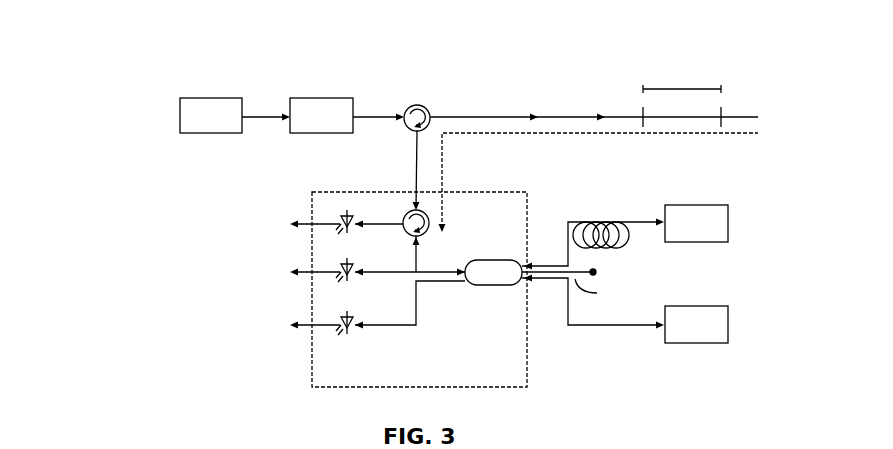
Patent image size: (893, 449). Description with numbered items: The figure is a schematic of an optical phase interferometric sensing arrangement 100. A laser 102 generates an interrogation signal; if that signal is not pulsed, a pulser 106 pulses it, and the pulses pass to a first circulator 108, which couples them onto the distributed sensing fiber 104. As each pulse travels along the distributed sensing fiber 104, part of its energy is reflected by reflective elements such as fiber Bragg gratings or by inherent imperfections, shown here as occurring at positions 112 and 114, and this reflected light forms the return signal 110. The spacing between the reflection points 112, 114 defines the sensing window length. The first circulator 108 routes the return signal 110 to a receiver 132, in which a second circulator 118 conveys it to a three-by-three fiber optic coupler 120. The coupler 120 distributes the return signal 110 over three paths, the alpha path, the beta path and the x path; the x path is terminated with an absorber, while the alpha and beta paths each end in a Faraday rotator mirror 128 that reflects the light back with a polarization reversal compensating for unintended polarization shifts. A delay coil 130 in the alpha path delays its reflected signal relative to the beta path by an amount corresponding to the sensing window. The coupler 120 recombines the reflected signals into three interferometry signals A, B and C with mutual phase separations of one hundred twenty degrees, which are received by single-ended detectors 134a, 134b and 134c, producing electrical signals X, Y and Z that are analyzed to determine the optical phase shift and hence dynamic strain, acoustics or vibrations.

The optical phase interferometric sensing arrangement 100 is at (152, 24).
The laser 102 is at (212, 97).
The distributed sensing fiber 104 is at (494, 113).
The pulser 106 is at (337, 97).
The first circulator 108 is at (421, 104).
The return signal 110 is at (598, 136).
The position 112 is at (641, 107).
The position 114 is at (734, 108).
The second circulator 118 is at (432, 222).
The 3×3 fiber optic coupler 120 is at (492, 287).
The Faraday rotator mirror 128 is at (700, 204).
The delay coil 130 is at (626, 247).
The receiver 132 is at (366, 192).
The single-ended detector 134a is at (333, 220).
The single-ended detector 134b is at (333, 270).
The single-ended detector 134c is at (333, 322).